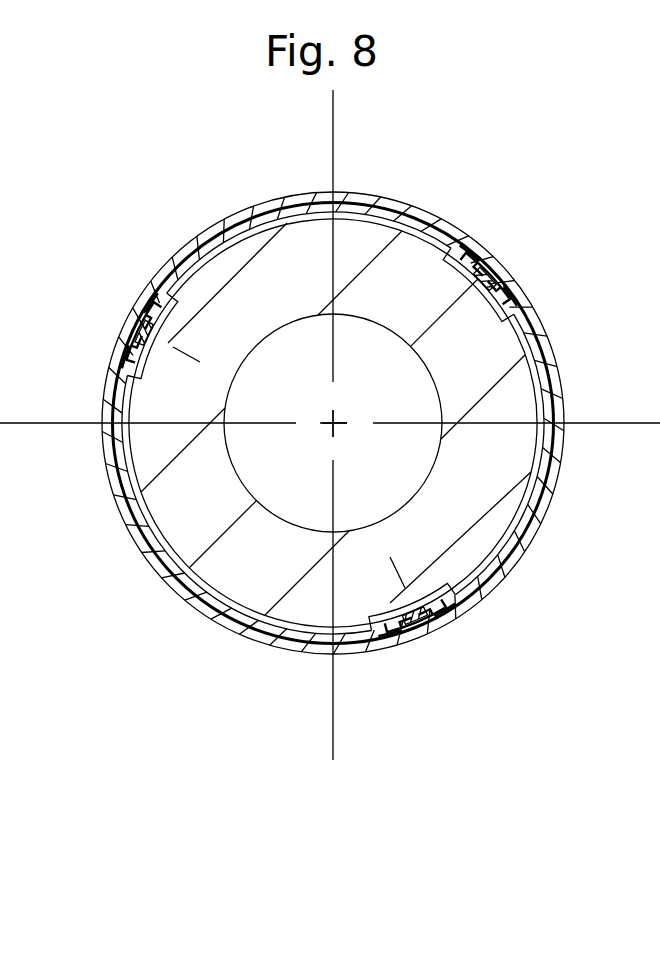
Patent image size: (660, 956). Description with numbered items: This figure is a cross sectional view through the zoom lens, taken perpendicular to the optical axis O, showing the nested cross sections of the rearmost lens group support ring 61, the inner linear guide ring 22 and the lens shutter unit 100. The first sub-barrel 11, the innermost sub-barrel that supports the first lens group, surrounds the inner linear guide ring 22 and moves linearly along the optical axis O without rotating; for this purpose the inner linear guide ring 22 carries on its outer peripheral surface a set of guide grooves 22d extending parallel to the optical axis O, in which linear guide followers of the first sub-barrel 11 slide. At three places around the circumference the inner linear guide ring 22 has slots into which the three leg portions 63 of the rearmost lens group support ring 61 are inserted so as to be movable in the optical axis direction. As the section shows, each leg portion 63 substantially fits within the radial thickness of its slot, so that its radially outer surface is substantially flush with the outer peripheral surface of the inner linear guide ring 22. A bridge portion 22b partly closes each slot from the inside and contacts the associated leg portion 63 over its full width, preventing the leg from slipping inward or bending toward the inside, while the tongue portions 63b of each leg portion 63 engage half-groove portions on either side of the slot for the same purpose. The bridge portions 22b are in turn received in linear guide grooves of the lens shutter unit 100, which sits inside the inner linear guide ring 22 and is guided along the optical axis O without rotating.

The first sub-barrel 11 is at (455, 228).
The inner linear guide ring 22 is at (558, 360).
The bridge portion 22b is at (172, 294).
The guide groove 22d is at (373, 625).
The rearmost lens group support ring 61 is at (440, 622).
The leg portion 63 is at (480, 250).
The tongue portion 63b is at (420, 625).
The lens shutter unit 100 is at (508, 462).
The optical axis O is at (336, 427).